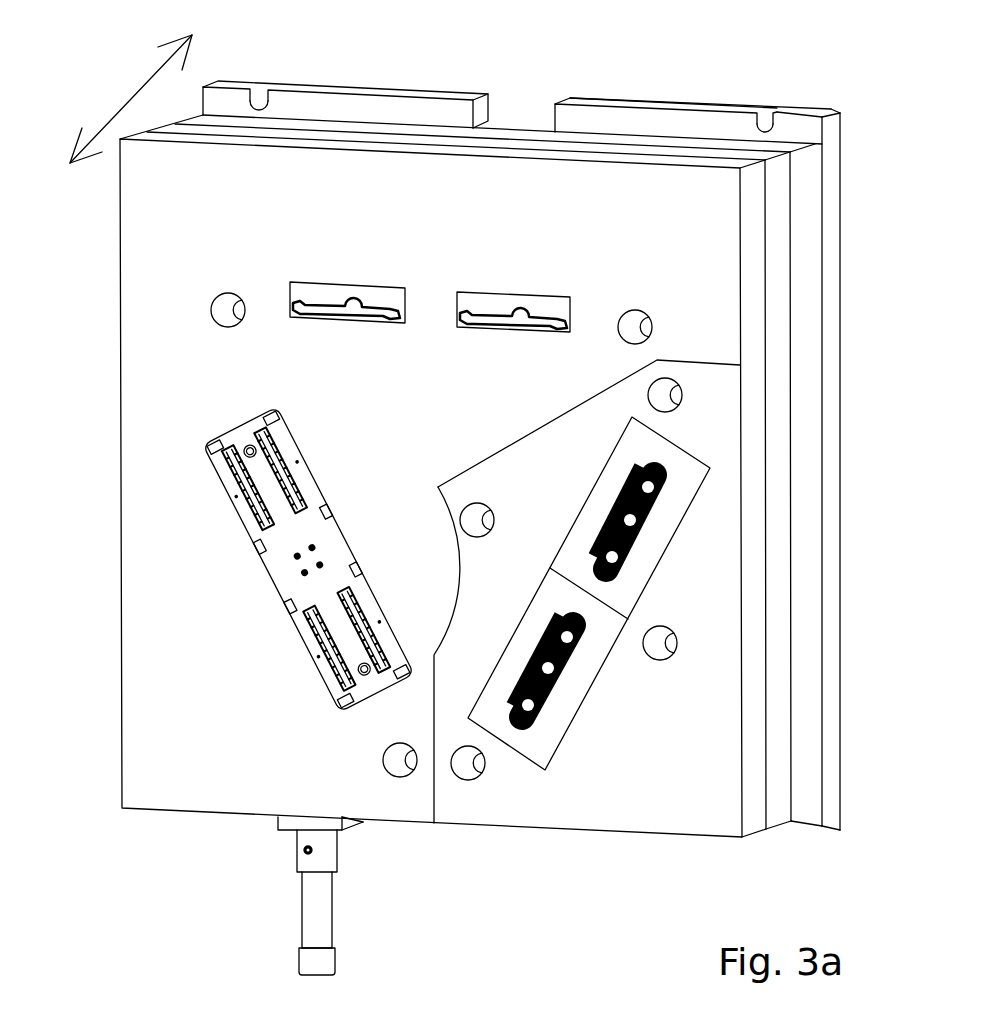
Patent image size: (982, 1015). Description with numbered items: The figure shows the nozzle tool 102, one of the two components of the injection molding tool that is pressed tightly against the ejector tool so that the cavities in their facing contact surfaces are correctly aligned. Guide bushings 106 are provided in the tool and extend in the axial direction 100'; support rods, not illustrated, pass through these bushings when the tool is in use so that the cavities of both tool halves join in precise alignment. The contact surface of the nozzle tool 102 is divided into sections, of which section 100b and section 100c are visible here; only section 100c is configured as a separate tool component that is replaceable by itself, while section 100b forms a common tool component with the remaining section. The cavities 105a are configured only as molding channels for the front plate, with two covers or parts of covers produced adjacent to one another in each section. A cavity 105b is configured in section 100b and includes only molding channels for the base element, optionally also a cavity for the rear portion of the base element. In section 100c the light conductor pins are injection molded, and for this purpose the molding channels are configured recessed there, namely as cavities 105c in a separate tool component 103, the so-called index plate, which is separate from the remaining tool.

The axial direction 100' is at (245, 299).
The nozzle tool 102 is at (603, 120).
The tool component (index plate) 103 is at (310, 488).
The cavities 105a is at (458, 328).
The cavity 105b is at (612, 570).
The cavities 105c is at (293, 508).
The guide bushings 106 is at (222, 310).
The section 100b is at (589, 586).
The section 100c is at (323, 655).